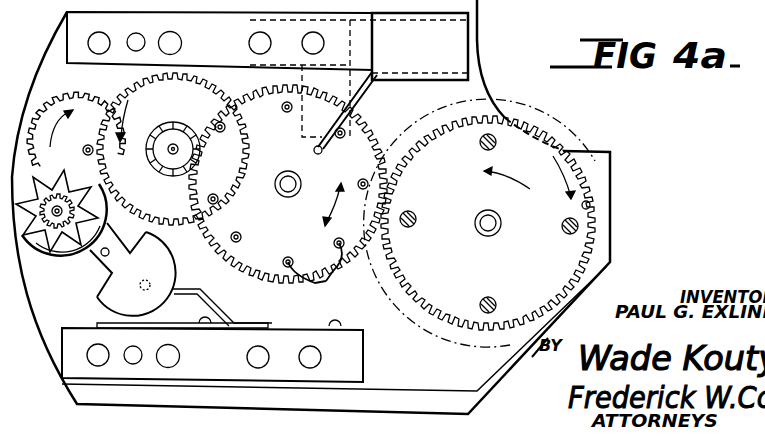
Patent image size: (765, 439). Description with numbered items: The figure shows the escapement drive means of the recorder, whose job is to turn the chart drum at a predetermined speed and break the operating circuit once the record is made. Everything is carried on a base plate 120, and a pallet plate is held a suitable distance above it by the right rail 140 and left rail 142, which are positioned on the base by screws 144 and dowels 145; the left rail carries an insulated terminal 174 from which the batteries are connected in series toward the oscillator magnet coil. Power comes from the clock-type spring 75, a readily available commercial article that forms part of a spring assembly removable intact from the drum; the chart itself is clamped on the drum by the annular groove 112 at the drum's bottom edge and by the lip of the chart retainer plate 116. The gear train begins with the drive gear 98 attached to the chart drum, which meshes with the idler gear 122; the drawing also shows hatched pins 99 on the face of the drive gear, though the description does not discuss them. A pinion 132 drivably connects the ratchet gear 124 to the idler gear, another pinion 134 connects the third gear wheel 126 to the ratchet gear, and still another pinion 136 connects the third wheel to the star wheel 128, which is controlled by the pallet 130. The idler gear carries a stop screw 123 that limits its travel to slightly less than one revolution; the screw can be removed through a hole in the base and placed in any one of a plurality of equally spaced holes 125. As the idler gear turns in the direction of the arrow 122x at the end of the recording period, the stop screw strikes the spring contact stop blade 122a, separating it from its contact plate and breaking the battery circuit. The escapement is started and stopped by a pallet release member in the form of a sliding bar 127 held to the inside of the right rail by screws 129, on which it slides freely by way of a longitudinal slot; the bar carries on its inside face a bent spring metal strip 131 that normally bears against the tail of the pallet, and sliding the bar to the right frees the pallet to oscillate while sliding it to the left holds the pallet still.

The spring 75 is at (590, 206).
The drive gear 98 is at (572, 140).
The pins on main gear 99 is at (418, 213).
The annular groove 112 is at (318, 33).
The chart retainer plate 116 is at (265, 33).
The base plate 120 is at (470, 87).
The idler gear 122 is at (367, 125).
The spring contact stop blade 122a is at (372, 103).
The arrow 122x is at (313, 204).
The stop screw 123 is at (320, 150).
The ratchet gear 124 is at (182, 82).
The equally spaced holes 125 is at (328, 283).
The third gear wheel 126 is at (115, 77).
The sliding bar 127 is at (100, 327).
The star wheel 128 is at (107, 227).
The screws 129 is at (204, 321).
The pallet 130 is at (173, 275).
The bent spring metal strip 131 is at (222, 305).
The pinion 132 is at (193, 111).
The pinion 134 is at (92, 140).
The pinion 136 is at (32, 258).
The right rail 140 is at (353, 364).
The left rail 142 is at (362, 27).
The screws 144 is at (97, 40).
The dowels 145 is at (135, 38).
The insulated terminal 174 is at (258, 357).